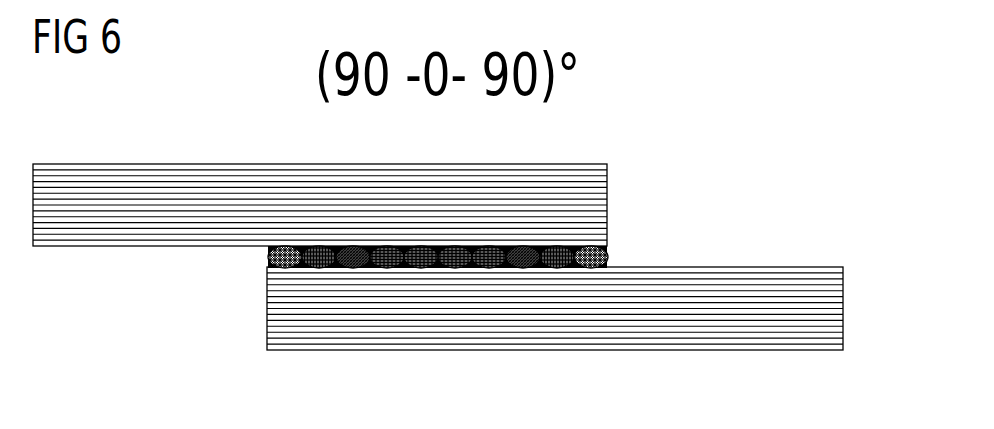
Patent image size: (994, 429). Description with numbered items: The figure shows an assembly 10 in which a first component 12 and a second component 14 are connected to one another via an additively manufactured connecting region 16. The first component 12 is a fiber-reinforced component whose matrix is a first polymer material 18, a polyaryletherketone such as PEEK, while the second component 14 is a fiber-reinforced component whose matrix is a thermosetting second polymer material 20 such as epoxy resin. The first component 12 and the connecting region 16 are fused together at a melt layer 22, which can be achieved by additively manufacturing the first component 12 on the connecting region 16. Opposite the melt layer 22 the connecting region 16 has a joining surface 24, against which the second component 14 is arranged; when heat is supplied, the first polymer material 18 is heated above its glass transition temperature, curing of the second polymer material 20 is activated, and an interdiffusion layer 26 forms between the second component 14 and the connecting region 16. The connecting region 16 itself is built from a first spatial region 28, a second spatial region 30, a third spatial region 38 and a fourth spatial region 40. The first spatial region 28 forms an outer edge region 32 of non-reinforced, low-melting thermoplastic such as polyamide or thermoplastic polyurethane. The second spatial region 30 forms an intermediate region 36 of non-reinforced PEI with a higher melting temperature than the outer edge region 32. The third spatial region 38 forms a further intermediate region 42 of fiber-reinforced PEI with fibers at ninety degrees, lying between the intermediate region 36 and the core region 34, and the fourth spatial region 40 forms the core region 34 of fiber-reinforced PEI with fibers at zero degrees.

The assembly 10 is at (161, 137).
The first component 12 is at (57, 235).
The second component 14 is at (797, 281).
The connecting region 16 is at (251, 256).
The first polymer material 18 is at (112, 235).
The second polymer material 20 is at (744, 281).
The melt layer 22 is at (490, 246).
The joining surface 24 is at (421, 268).
The interdiffusion layer 26 is at (591, 268).
The first spatial region 28 is at (288, 246).
The second spatial region 30 is at (316, 246).
The outer edge region 32 is at (264, 189).
The core region 34 is at (510, 189).
The intermediate region 36 is at (331, 189).
The third spatial region 38 is at (355, 246).
The fourth spatial region 40 is at (455, 246).
The further intermediate region 42 is at (399, 189).